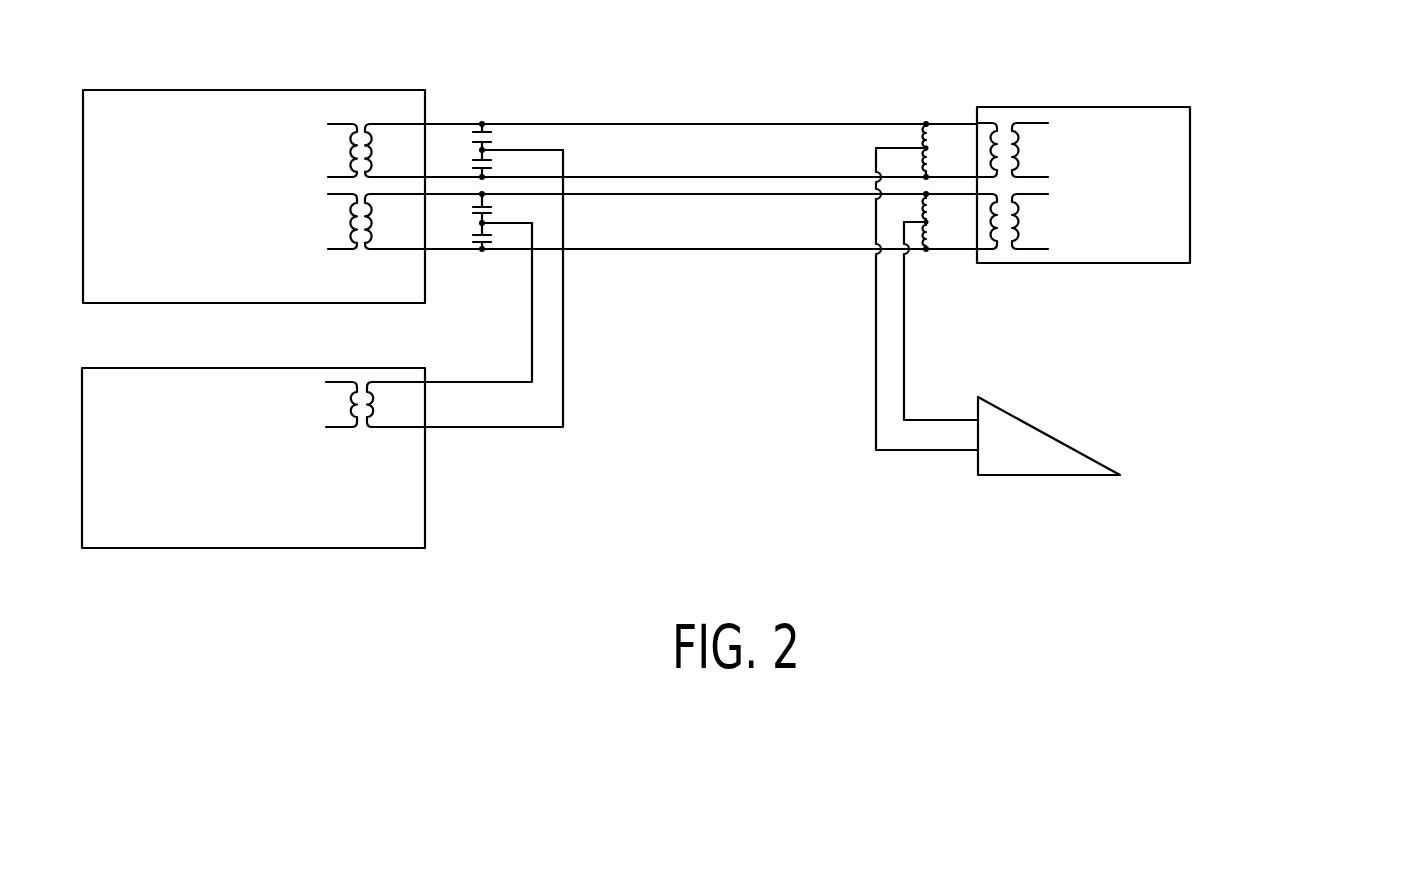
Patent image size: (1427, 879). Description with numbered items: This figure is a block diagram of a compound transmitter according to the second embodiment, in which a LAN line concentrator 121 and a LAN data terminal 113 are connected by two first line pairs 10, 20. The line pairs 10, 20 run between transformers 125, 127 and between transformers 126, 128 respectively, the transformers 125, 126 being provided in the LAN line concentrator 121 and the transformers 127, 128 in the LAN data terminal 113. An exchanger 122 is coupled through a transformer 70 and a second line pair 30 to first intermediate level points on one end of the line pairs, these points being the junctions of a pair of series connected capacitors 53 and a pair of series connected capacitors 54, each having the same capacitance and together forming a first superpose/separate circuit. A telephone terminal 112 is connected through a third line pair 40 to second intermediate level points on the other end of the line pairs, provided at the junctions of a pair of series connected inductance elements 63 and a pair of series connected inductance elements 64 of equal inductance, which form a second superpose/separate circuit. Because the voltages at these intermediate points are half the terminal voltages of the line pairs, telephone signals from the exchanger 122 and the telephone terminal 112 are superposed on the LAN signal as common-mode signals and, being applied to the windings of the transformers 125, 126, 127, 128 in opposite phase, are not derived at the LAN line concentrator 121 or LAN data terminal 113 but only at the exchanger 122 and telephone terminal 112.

The first line pair 10 is at (700, 165).
The first line pair 20 is at (736, 197).
The second line pair 30 is at (533, 325).
The third line pair 40 is at (877, 368).
The pair of series connected capacitors 53 is at (481, 124).
The pair of series connected capacitors 54 is at (482, 243).
The pair of series connected inductance elements 63 is at (948, 118).
The pair of series connected inductance elements 64 is at (942, 240).
The transformer 70 is at (366, 428).
The telephone terminal 112 is at (1057, 437).
The LAN data terminal 113 is at (1087, 137).
The LAN line concentrator 121 is at (193, 117).
The exchanger 122 is at (182, 407).
The transformer 125 is at (362, 126).
The transformer 126 is at (363, 253).
The transformer 127 is at (1003, 127).
The transformer 128 is at (1007, 251).